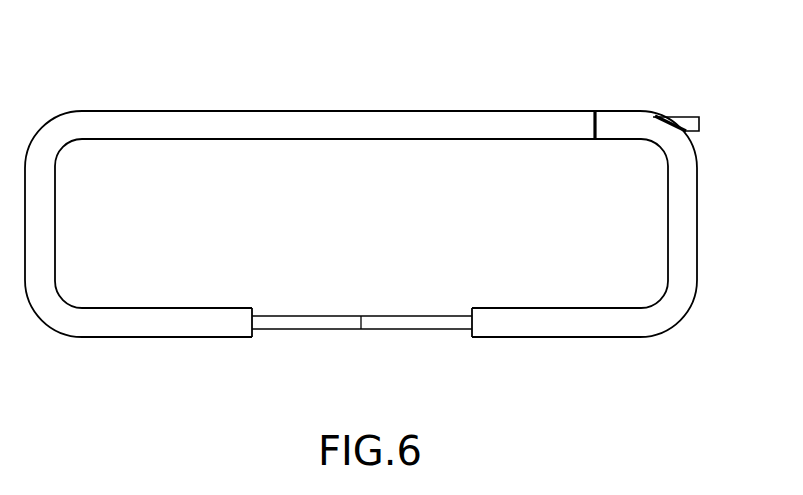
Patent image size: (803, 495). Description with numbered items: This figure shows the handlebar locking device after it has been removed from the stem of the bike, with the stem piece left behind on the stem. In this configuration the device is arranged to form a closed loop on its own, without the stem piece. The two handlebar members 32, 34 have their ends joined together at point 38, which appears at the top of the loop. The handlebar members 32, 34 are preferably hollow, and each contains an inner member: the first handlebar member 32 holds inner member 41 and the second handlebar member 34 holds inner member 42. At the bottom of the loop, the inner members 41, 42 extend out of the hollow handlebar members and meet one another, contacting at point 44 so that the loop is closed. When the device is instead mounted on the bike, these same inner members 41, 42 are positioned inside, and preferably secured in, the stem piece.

The handlebar member 32 is at (55, 219).
The handlebar member 34 is at (679, 205).
The point 38 is at (597, 101).
The inner member 41 is at (290, 326).
The inner member 42 is at (420, 326).
The point 44 is at (370, 296).